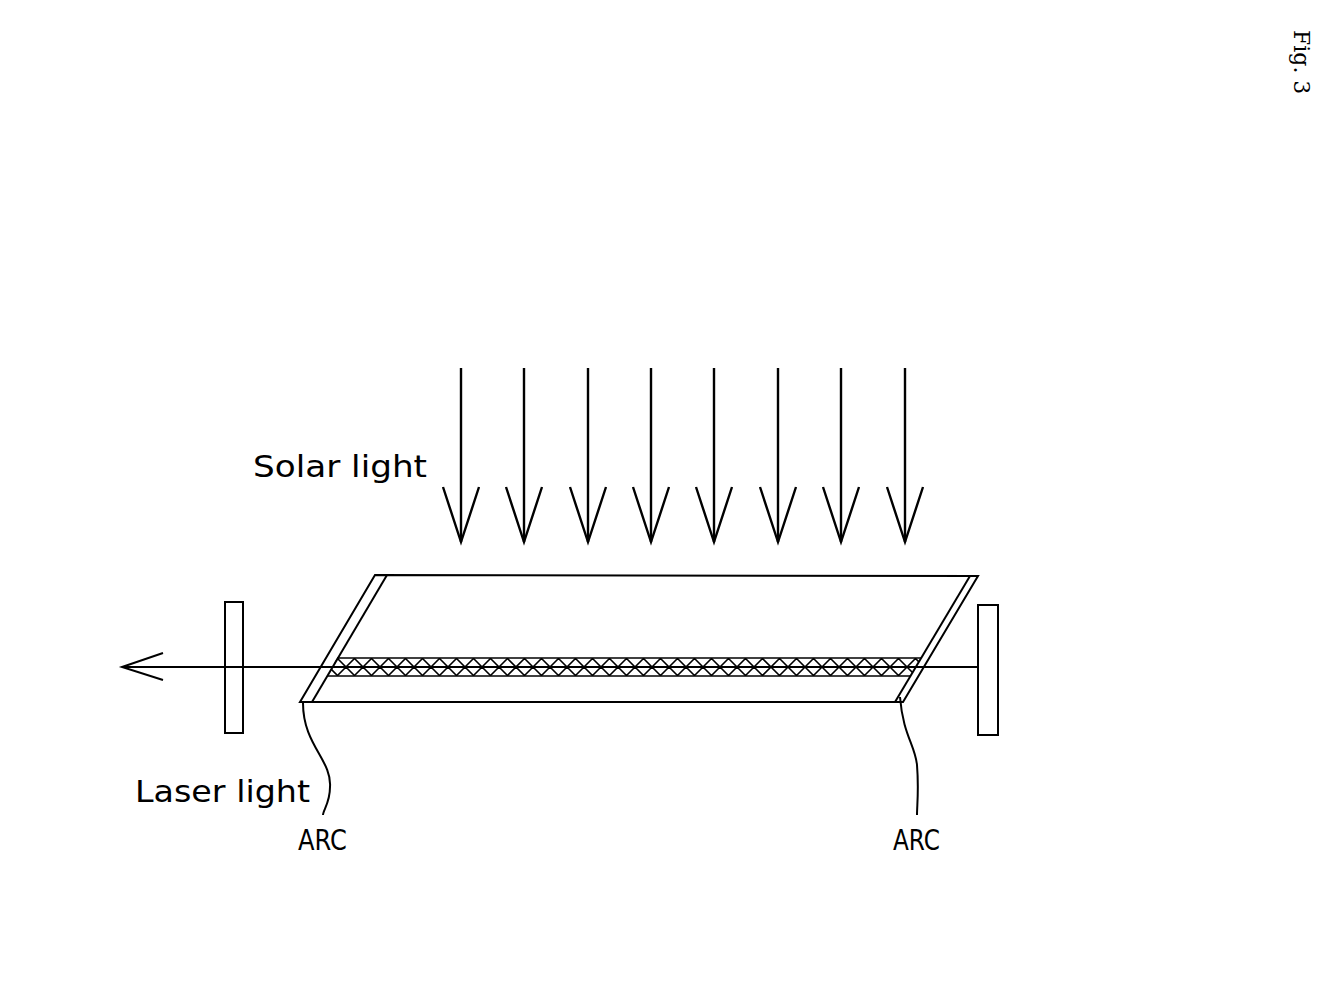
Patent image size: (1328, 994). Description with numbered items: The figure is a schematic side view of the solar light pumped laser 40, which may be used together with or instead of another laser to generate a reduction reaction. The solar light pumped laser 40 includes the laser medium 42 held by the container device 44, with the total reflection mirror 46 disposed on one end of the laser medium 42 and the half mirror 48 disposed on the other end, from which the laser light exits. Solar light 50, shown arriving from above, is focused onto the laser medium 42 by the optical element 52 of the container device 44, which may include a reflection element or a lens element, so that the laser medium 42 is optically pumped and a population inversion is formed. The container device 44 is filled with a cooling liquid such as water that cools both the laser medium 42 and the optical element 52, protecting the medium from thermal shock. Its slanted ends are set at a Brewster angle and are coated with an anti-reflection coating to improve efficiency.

The solar light pumped laser 40 is at (648, 489).
The laser medium 42 is at (390, 660).
The container device 44 is at (393, 627).
The total reflection mirror 46 is at (985, 648).
The half mirror 48 is at (237, 608).
The solar light 50 is at (905, 443).
The optical element 52 is at (538, 703).